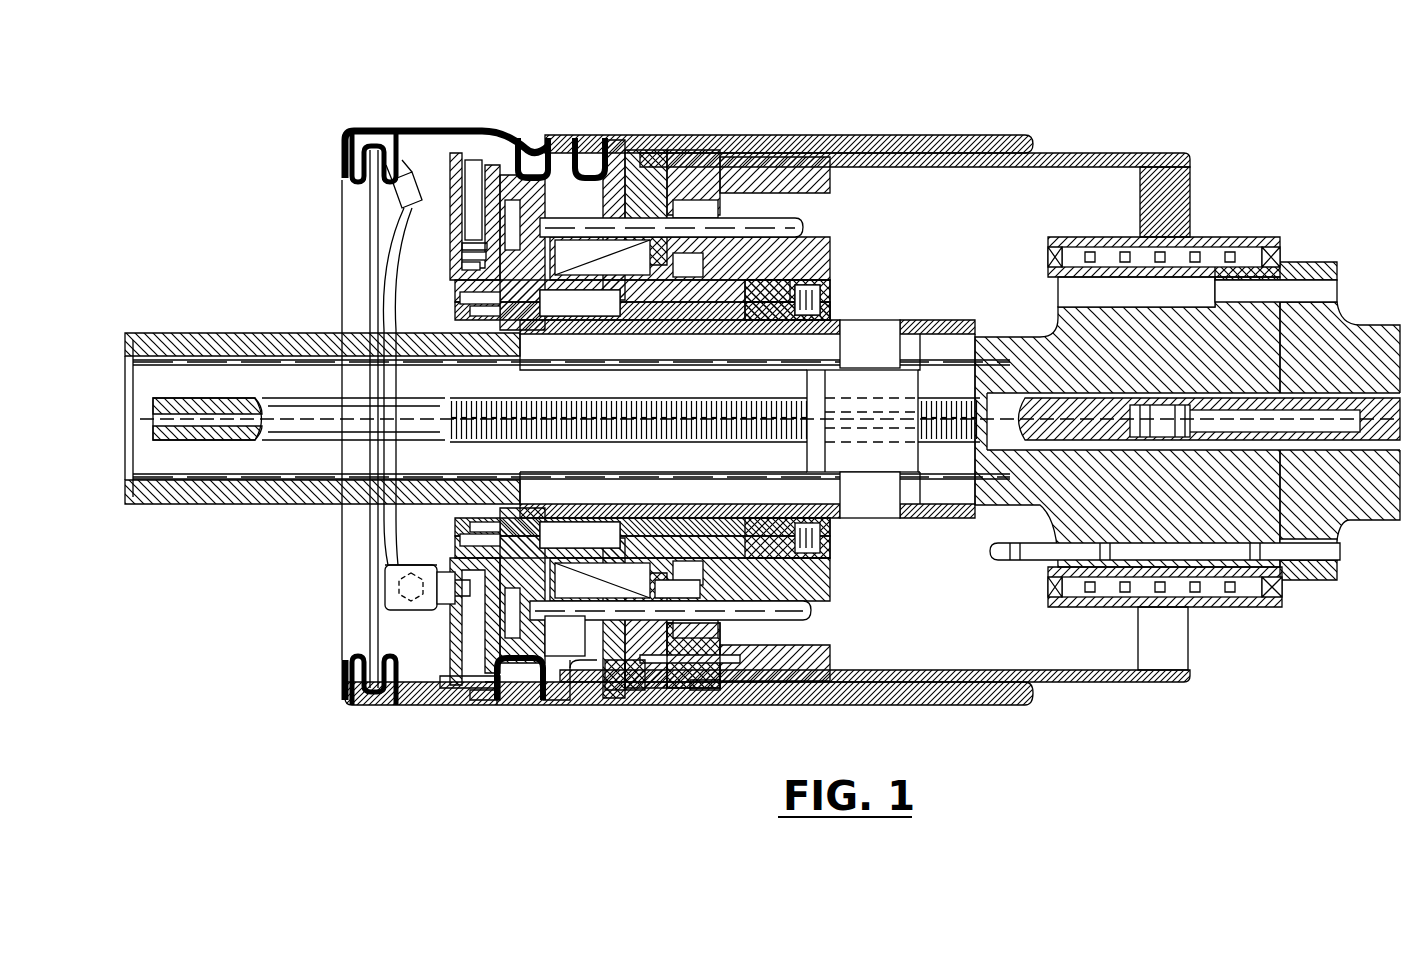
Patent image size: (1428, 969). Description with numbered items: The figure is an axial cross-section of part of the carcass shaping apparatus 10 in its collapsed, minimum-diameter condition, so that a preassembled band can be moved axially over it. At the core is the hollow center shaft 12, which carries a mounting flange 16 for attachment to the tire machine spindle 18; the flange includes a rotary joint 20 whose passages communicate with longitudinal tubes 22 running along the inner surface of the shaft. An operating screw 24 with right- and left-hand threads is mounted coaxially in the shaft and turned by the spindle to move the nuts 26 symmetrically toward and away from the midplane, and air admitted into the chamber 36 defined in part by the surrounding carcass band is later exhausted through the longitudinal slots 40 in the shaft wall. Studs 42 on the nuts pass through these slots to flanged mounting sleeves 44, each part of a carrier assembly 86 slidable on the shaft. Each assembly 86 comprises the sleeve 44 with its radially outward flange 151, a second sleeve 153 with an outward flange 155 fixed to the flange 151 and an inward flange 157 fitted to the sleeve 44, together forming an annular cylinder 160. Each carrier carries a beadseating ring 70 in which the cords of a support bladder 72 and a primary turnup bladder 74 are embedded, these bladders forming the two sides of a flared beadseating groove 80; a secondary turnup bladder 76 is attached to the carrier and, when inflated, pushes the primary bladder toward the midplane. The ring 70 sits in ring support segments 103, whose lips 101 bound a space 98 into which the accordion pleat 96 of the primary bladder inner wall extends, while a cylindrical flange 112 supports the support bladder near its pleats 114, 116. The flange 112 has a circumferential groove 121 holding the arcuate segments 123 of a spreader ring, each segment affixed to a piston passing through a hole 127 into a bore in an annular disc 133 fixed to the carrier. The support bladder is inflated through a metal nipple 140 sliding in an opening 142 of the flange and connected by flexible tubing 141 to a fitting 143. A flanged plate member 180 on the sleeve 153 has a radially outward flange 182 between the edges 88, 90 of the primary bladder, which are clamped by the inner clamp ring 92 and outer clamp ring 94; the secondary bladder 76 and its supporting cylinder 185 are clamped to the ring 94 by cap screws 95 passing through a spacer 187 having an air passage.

The carcass shaping apparatus 10 is at (586, 118).
The hollow center shaft 12 is at (248, 506).
The mounting flange 16 is at (1250, 303).
The tire machine spindle 18 is at (1340, 340).
The rotary joint 20 is at (1212, 240).
The longitudinal tubes 22 is at (302, 482).
The operating screw 24 is at (305, 403).
The nuts 26 is at (843, 392).
The chamber 36 is at (290, 590).
The longitudinal slots 40 is at (620, 348).
The studs 42 is at (890, 346).
The flanged mounting sleeve 44 is at (870, 320).
The beadseating ring 70 is at (522, 160).
The support bladder 72 is at (366, 130).
The primary turnup bladder 74 is at (838, 138).
The secondary turnup bladder 76 is at (1128, 146).
The flared beadseating groove 80 is at (536, 150).
The carrier assembly 86 is at (816, 288).
The edge of inner wall part 88 is at (614, 680).
The edge of inner wall part 90 is at (690, 660).
The inner clamp ring 92 is at (640, 690).
The outer clamp ring 94 is at (696, 690).
The cap screws 95 is at (722, 660).
The accordion pleat 96 is at (584, 690).
The space 98 is at (590, 646).
The lip 101 is at (558, 705).
The ring support segments 103 is at (492, 708).
The cylindrical flange 112 is at (452, 146).
The accordion pleat 114 is at (372, 183).
The accordion pleat 116 is at (342, 178).
The circumferential groove 121 is at (472, 705).
The arcuate segments 123 is at (478, 708).
The hole 127 is at (464, 150).
The annular disc 133 is at (455, 263).
The metal nipple 140 is at (398, 198).
The flexible tubing 141 is at (400, 298).
The opening 142 is at (415, 197).
The fitting 143 is at (395, 590).
The radially outwardly extending flange 151 is at (455, 240).
The second sleeve 153 is at (748, 282).
The radially outwardly extending flange 155 is at (552, 241).
The radially inwardly extending flange 157 is at (838, 318).
The annular cylinder 160 is at (596, 313).
The flanged plate member 180 is at (660, 596).
The radially outward flange 182 is at (645, 635).
The supporting cylinder 185 is at (948, 160).
The spacer 187 is at (722, 182).